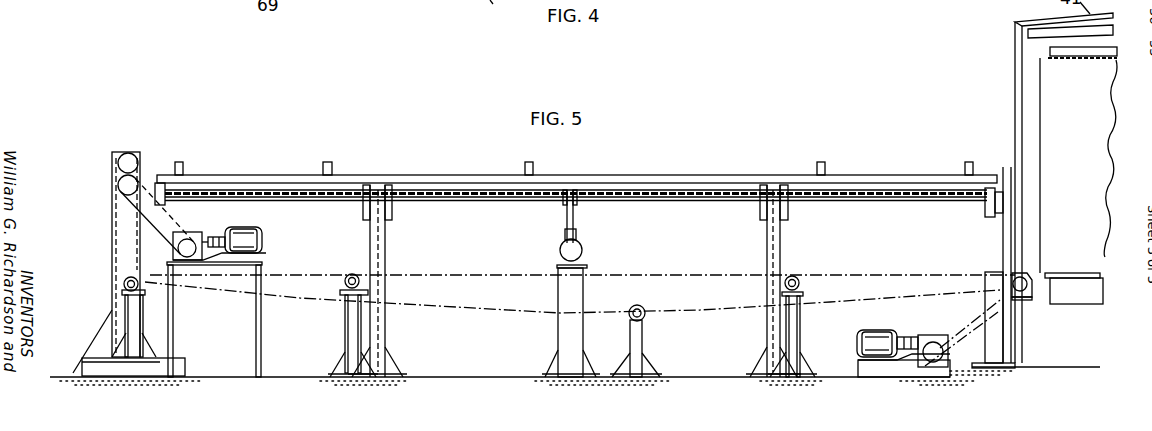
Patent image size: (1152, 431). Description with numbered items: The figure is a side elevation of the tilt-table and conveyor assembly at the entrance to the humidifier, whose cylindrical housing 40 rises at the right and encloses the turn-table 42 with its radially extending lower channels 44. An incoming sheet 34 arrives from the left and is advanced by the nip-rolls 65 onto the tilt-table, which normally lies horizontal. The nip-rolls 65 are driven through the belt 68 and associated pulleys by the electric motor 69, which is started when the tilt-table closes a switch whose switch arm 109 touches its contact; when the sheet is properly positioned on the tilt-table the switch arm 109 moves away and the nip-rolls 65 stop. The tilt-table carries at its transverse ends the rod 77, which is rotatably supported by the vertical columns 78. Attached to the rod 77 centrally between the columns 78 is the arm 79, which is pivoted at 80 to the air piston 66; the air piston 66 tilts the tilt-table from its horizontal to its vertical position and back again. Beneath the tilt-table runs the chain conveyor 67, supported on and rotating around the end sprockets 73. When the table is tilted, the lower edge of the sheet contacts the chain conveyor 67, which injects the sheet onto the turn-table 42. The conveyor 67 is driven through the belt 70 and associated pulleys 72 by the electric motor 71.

The incoming sheet 34 is at (103, 173).
The nip-rolls 65 is at (129, 160).
The belt 68 is at (176, 226).
The electric motor 69 is at (262, 243).
The pulleys 72 is at (123, 282).
The end sprockets 73 is at (347, 279).
The vertical columns 78 is at (386, 256).
The chain conveyor 67 is at (462, 274).
The rod 77 is at (548, 198).
The pivot 80 is at (564, 235).
The arm 79 is at (577, 223).
The air piston 66 is at (585, 252).
The switch arm 109 is at (993, 214).
The cylindrical housing 40 is at (1014, 44).
The lower channels 44 is at (1093, 276).
The turn-table 42 is at (1103, 289).
The belt 70 is at (997, 290).
The electric motor 71 is at (868, 333).